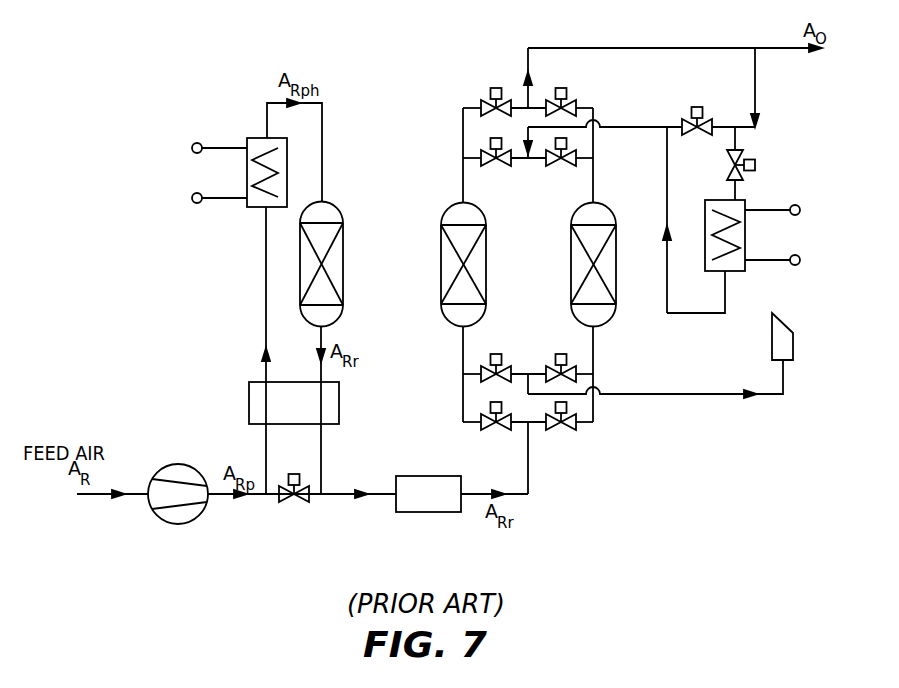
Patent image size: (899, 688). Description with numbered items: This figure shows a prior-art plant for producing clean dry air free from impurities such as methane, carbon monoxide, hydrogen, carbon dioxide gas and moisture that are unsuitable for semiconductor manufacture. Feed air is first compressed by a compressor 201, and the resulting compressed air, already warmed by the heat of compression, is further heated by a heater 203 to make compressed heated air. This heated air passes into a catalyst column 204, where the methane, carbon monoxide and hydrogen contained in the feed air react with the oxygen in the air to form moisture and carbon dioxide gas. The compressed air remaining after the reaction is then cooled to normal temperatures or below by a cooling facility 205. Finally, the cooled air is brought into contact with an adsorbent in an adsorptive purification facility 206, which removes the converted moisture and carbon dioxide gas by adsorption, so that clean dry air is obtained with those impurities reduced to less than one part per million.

The compressor 201 is at (176, 465).
The heater 203 is at (247, 166).
The catalyst column 204 is at (343, 211).
The cooling facility 205 is at (429, 513).
The adsorptive purification facility 206 is at (570, 266).